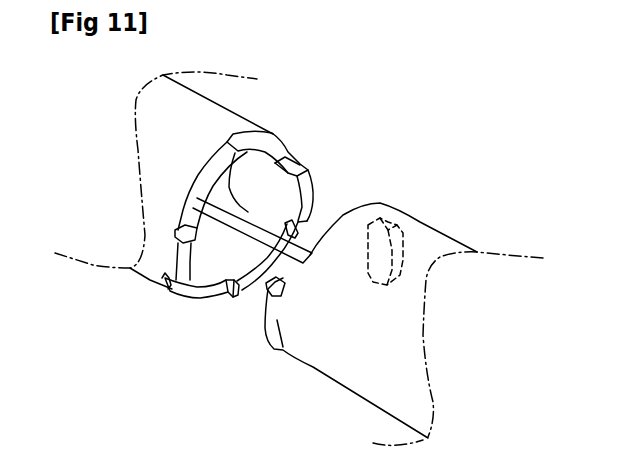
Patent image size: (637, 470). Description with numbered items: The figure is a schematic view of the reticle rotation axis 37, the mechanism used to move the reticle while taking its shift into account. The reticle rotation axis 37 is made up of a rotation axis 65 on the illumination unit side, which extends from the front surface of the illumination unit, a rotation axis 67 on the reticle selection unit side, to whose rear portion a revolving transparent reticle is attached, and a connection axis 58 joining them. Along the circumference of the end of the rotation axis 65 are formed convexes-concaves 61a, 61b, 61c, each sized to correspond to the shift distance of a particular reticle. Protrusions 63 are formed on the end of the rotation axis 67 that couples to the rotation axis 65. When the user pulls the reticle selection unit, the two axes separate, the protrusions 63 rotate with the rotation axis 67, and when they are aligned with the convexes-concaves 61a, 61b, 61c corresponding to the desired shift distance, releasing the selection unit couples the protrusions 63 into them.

The reticle rotation axis 37 is at (394, 126).
The connection axis 58 is at (310, 245).
The convex-concave 61a is at (267, 146).
The convex-concave 61b is at (197, 182).
The convex-concave 61c is at (311, 172).
The protrusions 63 is at (400, 220).
The rotation axis on illumination unit side 65 is at (178, 106).
The rotation axis on reticle selection unit side 67 is at (447, 243).